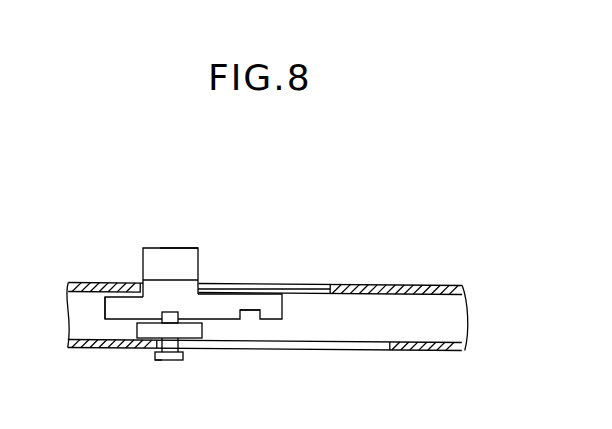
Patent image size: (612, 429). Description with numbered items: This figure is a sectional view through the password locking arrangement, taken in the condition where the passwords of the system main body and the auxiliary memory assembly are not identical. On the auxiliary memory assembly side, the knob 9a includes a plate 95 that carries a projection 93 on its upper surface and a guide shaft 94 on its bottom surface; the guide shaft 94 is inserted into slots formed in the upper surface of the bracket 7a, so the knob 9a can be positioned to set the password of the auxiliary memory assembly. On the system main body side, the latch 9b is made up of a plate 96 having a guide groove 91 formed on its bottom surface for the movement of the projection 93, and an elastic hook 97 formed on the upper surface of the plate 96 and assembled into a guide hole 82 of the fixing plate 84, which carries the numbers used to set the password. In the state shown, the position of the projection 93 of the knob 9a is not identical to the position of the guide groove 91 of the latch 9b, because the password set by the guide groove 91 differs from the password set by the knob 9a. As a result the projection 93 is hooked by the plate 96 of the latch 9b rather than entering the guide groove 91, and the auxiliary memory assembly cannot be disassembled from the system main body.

The fixing plate 84 is at (359, 292).
The bracket 7a is at (435, 351).
The guide hole 82 is at (239, 284).
The hook 97 is at (162, 258).
The plate 96 is at (121, 302).
The latch 9b is at (178, 242).
The projection 93 is at (167, 315).
The plate 95 is at (190, 328).
The guide shaft 94 is at (170, 360).
The knob 9a is at (157, 361).
The guide groove 91 is at (250, 312).